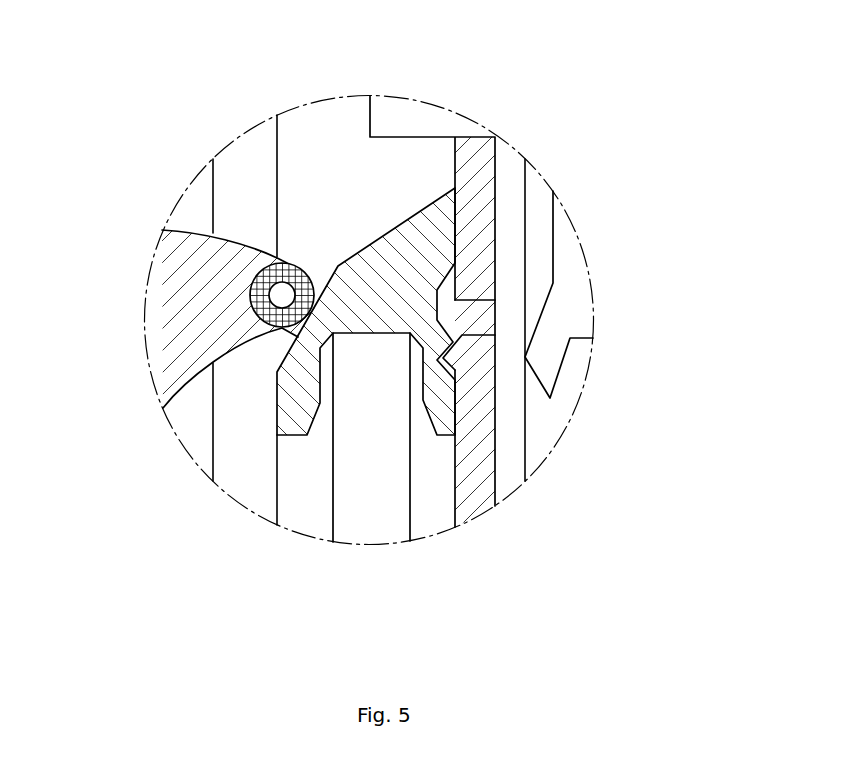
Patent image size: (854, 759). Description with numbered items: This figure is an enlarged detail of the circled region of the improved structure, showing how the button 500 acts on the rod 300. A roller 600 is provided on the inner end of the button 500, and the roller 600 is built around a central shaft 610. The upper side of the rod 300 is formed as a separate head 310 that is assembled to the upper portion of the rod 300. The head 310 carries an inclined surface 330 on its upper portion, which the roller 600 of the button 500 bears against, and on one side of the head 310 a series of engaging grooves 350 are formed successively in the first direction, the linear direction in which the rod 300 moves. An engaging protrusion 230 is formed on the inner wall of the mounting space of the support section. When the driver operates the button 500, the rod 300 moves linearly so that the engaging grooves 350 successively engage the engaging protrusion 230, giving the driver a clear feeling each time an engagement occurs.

The engaging protrusion 230 is at (447, 361).
The rod 300 is at (372, 510).
The head 310 is at (363, 283).
The inclined surface 330 is at (413, 216).
The engaging grooves 350 is at (447, 312).
The button 500 is at (173, 350).
The roller 600 is at (257, 303).
The central shaft 610 is at (275, 292).